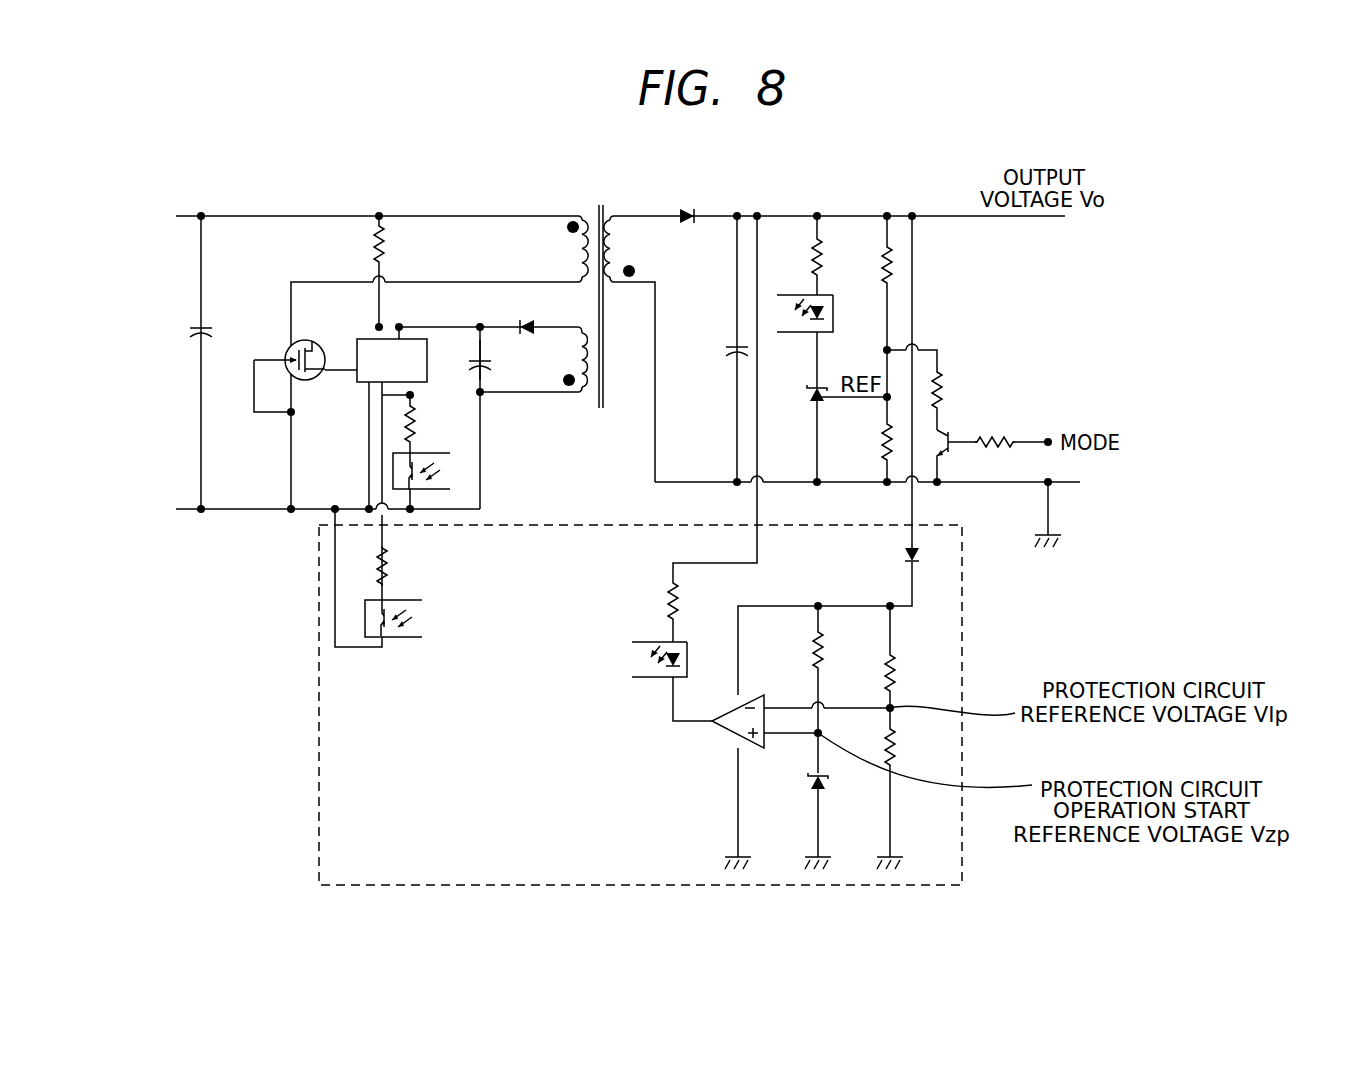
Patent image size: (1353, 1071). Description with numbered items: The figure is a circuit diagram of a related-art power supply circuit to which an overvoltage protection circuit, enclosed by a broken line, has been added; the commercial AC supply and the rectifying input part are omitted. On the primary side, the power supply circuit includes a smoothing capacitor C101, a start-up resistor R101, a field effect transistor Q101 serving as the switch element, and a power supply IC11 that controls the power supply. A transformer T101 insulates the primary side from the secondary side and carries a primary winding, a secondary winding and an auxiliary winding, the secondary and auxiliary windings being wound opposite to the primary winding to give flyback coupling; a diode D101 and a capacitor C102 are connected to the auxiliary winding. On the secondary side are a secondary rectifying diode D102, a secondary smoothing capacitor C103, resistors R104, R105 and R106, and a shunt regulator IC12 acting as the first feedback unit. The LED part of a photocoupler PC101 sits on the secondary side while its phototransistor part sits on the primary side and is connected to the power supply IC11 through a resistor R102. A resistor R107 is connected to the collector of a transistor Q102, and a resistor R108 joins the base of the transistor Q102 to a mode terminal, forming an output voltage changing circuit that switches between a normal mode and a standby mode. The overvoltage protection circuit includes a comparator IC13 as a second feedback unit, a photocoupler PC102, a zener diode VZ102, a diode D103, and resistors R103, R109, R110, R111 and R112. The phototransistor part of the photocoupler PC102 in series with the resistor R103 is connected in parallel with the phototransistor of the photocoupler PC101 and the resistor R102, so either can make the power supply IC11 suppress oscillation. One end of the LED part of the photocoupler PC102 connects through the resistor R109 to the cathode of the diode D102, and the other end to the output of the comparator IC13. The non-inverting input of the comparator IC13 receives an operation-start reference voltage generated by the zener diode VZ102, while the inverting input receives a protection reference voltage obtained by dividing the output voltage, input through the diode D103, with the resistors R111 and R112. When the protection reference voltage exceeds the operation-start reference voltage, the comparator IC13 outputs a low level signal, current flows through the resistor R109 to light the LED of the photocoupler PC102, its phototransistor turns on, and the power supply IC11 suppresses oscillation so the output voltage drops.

The smoothing capacitor C101 is at (224, 362).
The start-up resistor R101 is at (352, 271).
The field effect transistor Q101 is at (318, 346).
The power supply IC IC11 is at (392, 360).
The capacitor C102 is at (506, 360).
The diode D101 is at (528, 314).
The transformer T101 is at (600, 294).
The resistor R102 is at (439, 424).
The photocoupler PC101 is at (440, 453).
The resistor R103 is at (410, 566).
The photocoupler PC102 is at (526, 651).
The secondary rectifying diode D102 is at (690, 232).
The secondary smoothing capacitor C103 is at (710, 349).
The resistor R104 is at (822, 250).
The resistor R105 is at (884, 266).
The shunt regulator IC12 is at (797, 407).
The resistor R106 is at (859, 442).
The resistor R107 is at (964, 390).
The transistor Q102 is at (946, 433).
The resistor R108 is at (1009, 457).
The diode D103 is at (886, 559).
The resistor R109 is at (645, 601).
The resistor R110 is at (790, 650).
The resistor R111 is at (917, 673).
The resistor R112 is at (917, 747).
The comparator IC13 is at (723, 724).
The zener diode VZ102 is at (786, 782).